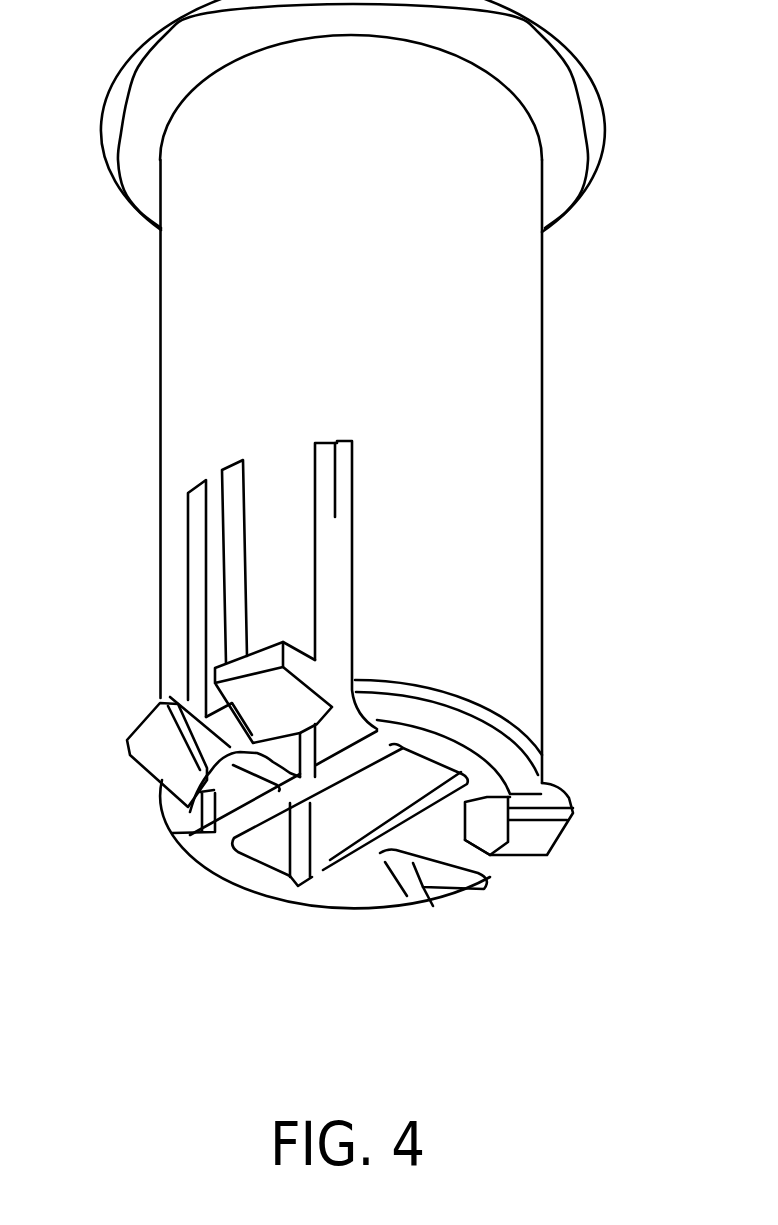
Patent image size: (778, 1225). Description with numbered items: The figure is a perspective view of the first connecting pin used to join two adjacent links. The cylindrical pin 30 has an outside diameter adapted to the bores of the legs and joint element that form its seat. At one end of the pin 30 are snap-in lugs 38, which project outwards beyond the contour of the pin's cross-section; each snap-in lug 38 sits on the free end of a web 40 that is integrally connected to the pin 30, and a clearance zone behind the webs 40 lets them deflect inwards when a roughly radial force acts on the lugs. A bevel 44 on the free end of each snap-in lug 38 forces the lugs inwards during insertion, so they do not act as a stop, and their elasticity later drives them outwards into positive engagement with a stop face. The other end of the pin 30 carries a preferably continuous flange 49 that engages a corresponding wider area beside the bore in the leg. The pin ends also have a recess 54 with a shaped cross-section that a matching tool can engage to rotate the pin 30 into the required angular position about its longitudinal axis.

The cylindrical pin 30 is at (512, 417).
The snap-in lugs 38 is at (145, 727).
The web 40 is at (295, 545).
The bevel 44 is at (182, 774).
The flange 49 is at (553, 58).
The recess 54 is at (337, 837).